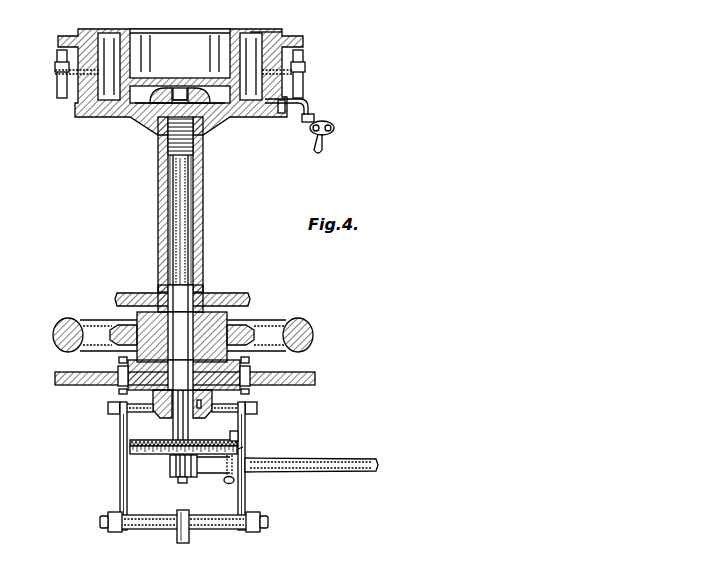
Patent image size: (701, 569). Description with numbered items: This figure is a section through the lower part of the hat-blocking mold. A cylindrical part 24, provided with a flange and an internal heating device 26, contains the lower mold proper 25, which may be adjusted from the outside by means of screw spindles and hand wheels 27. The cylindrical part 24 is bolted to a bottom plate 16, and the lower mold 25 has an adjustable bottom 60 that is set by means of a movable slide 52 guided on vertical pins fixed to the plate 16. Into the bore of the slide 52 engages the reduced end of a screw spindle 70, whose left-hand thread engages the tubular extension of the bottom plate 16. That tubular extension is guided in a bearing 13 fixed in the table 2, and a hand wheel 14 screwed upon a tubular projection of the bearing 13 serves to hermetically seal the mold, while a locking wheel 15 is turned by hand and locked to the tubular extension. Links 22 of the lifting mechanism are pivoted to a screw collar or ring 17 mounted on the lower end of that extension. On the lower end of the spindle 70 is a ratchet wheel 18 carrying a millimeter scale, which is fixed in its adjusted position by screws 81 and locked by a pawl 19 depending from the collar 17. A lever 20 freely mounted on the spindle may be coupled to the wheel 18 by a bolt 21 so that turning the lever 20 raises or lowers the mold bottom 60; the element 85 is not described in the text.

The table 2 is at (292, 386).
The bearing 13 is at (253, 366).
The hand wheel 14 is at (266, 323).
The locking wheel 15 is at (248, 297).
The bottom plate 16 is at (283, 110).
The screw collar or ring 17 is at (157, 416).
The ratchet wheel 18 is at (162, 455).
The locking pawl 19 is at (240, 440).
The lever 20 is at (316, 466).
The bolt 21 is at (226, 484).
The links 22 is at (120, 464).
The cylindrical part 24 is at (300, 42).
The lower mold proper 25 is at (272, 33).
The internal heating device 26 is at (310, 129).
The screw spindles and hand wheels 27 is at (303, 72).
The movable slide 52 is at (196, 104).
The adjustable bottom 60 is at (166, 76).
The screw spindle 70 is at (178, 425).
The screws 81 is at (246, 446).
The guide 85 is at (245, 460).